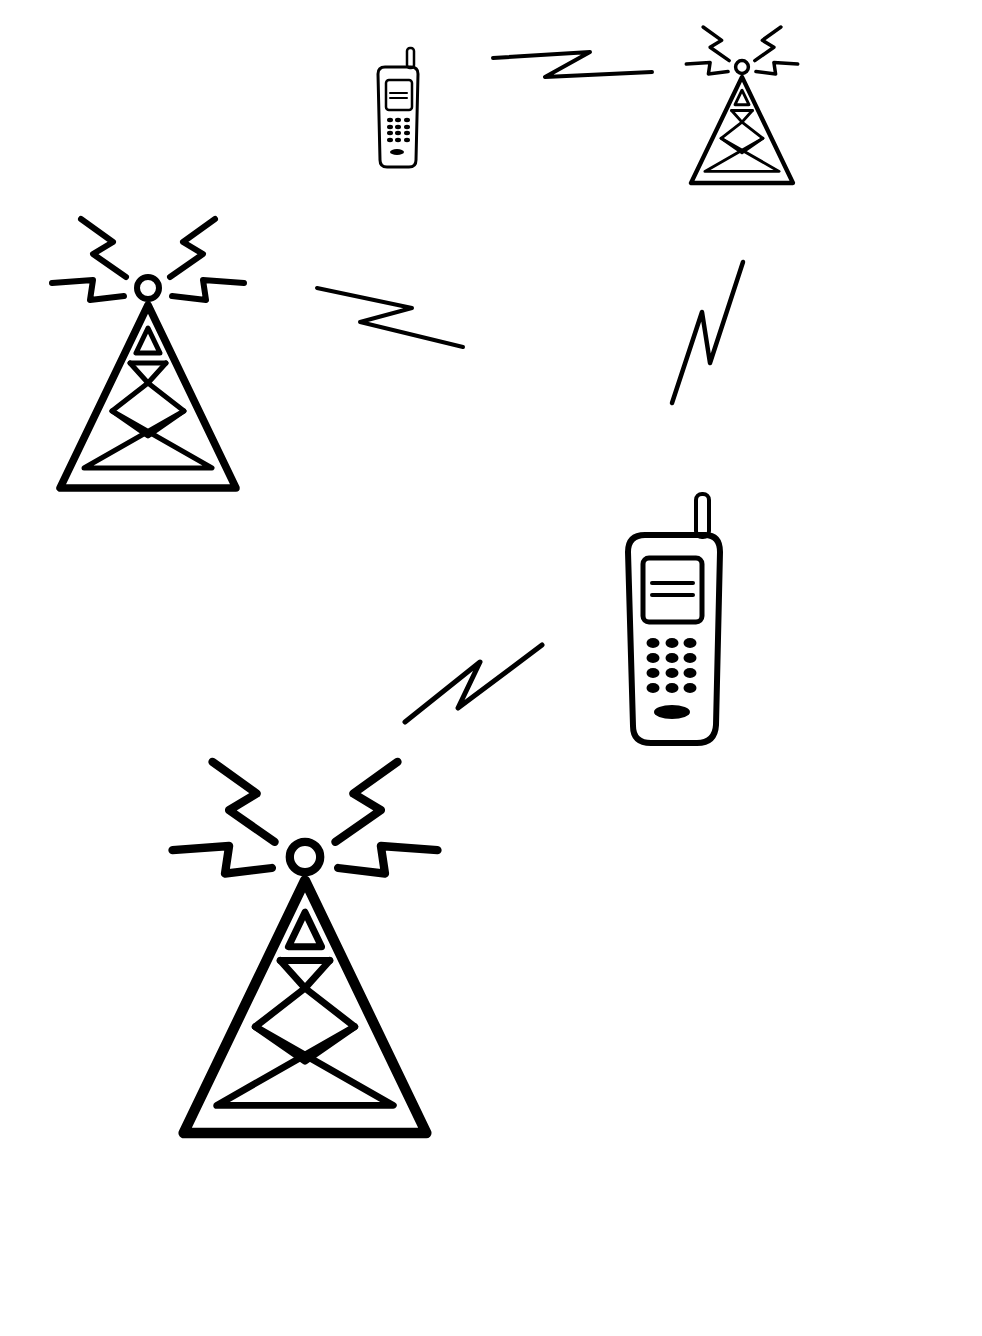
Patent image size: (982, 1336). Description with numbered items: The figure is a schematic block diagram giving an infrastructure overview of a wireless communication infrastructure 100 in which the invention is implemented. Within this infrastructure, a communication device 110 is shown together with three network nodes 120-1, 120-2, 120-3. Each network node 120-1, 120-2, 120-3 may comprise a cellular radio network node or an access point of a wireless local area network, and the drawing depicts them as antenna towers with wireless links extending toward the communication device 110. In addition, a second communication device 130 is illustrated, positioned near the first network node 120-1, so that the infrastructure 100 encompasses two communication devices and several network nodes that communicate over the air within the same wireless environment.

The wireless communication infrastructure 100 is at (196, 88).
The communication device 110 is at (720, 617).
The network node 120-1 is at (741, 123).
The network node 120-2 is at (148, 376).
The network node 120-3 is at (305, 964).
The second communication device 130 is at (422, 110).